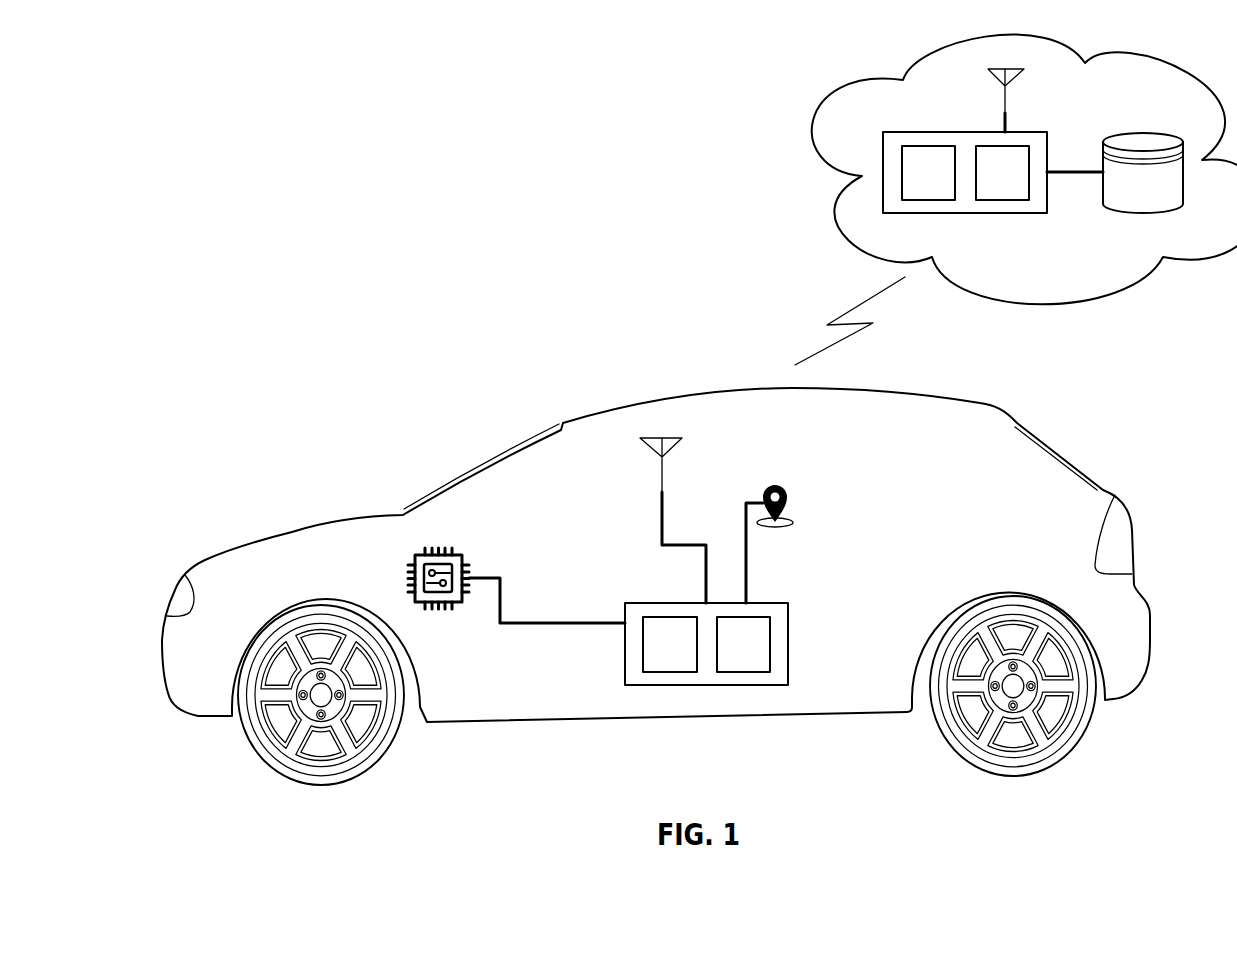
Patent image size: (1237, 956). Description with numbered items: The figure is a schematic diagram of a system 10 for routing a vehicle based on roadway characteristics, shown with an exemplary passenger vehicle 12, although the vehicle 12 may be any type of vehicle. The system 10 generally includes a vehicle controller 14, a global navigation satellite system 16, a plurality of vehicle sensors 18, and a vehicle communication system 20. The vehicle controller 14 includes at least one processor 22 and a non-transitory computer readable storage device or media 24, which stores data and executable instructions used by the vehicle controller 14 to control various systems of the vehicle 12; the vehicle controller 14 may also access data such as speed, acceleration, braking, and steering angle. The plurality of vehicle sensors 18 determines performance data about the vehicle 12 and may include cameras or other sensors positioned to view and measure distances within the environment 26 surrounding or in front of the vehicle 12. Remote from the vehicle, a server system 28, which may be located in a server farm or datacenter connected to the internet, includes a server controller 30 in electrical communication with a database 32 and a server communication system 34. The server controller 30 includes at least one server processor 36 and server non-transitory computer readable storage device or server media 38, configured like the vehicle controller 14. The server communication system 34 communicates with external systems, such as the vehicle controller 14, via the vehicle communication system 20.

The system for routing a vehicle based on roadway characteristics 10 is at (656, 586).
The vehicle 12 is at (292, 532).
The vehicle controller 14 is at (748, 650).
The global navigation satellite system (GNSS) 16 is at (790, 507).
The plurality of vehicle sensors 18 is at (462, 552).
The vehicle communication system 20 is at (657, 452).
The processor 22 is at (657, 657).
The non-transitory computer readable storage device or media 24 is at (757, 657).
The environment 26 is at (440, 372).
The server system 28 is at (832, 88).
The server controller 30 is at (967, 196).
The database 32 is at (1155, 201).
The server communication system 34 is at (1002, 80).
The server processor 36 is at (943, 186).
The server non-transitory computer readable storage device or server media 38 is at (1017, 186).